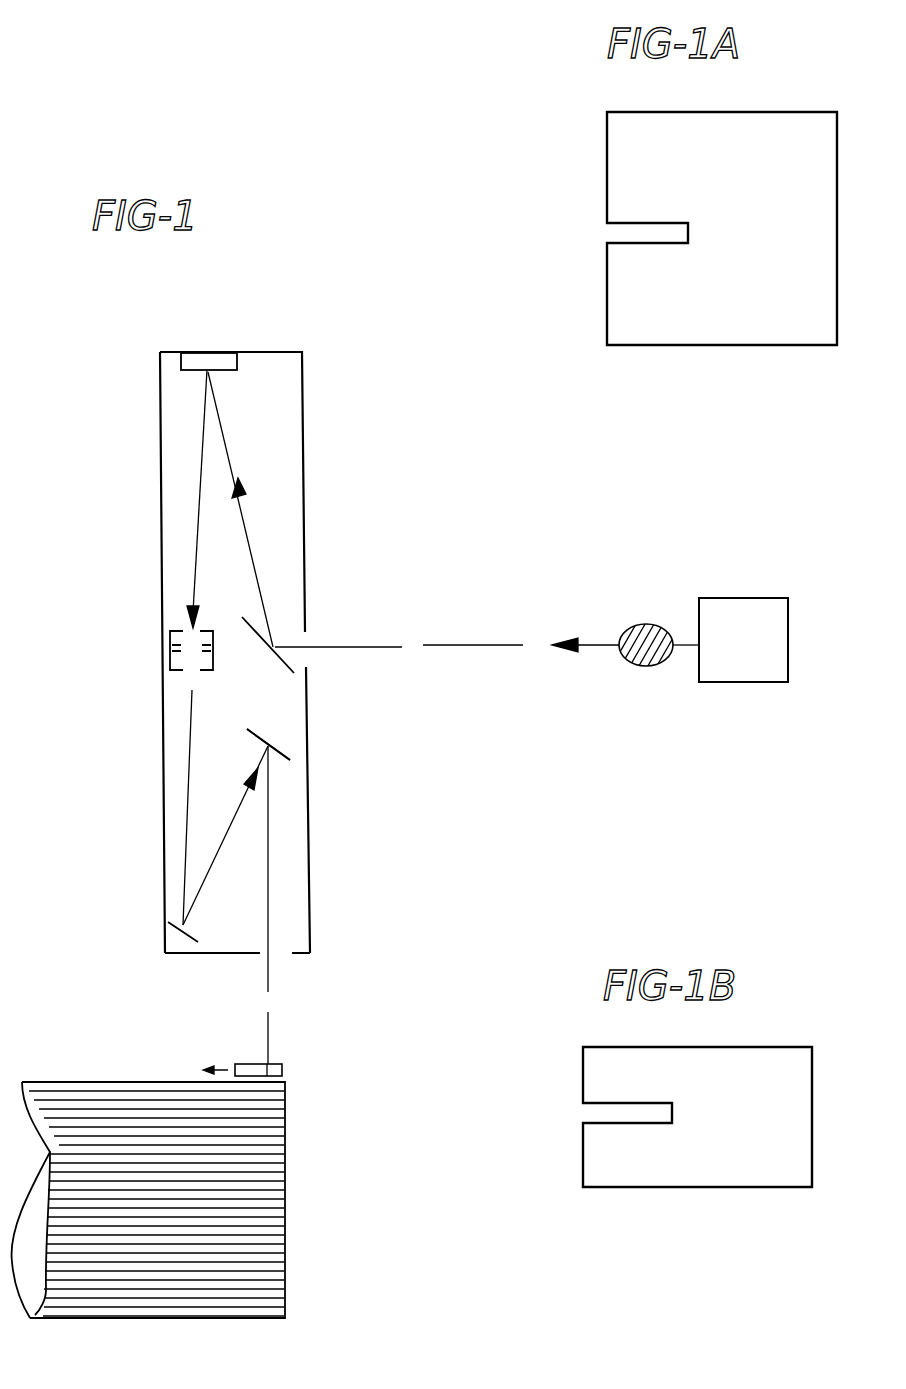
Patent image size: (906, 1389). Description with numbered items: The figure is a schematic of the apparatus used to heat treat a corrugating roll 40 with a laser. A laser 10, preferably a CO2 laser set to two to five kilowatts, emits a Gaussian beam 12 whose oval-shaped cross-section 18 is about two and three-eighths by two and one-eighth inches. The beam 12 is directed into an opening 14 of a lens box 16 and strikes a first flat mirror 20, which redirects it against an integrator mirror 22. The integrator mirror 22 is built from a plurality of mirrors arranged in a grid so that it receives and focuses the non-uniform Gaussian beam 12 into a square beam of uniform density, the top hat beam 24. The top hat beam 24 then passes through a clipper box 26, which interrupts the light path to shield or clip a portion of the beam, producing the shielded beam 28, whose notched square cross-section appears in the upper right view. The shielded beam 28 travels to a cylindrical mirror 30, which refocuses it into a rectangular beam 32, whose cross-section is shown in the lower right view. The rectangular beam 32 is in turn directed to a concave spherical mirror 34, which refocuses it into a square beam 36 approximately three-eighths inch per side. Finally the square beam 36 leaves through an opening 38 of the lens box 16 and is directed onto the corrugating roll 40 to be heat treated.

In FIG. 1, the laser 10 is at (729, 683).
In FIG. 1, the Gaussian beam 12 is at (474, 643).
In FIG. 1, the opening 14 is at (308, 639).
In FIG. 1, the lens box 16 is at (315, 494).
In FIG. 1, the oval-shaped cross-section 18 is at (655, 625).
In FIG. 1, the first flat mirror 20 is at (256, 729).
In FIG. 1, the integrator mirror 22 is at (206, 360).
In FIG. 1, the top hat beam 24 is at (196, 575).
In FIG. 1, the clipper box 26 is at (170, 655).
In FIG. 1, the shielded beam 28 is at (186, 810).
In FIG. 1A, the shielded beam 28 is at (657, 228).
In FIG. 1, the cylindrical mirror 30 is at (168, 948).
In FIG. 1, the rectangular beam 32 is at (205, 888).
In FIG. 1B, the rectangular beam 32 is at (771, 1054).
In FIG. 1, the spherical mirror 34 is at (273, 751).
In FIG. 1, the square beam 36 is at (270, 879).
In FIG. 1, the opening 38 is at (292, 955).
In FIG. 1, the corrugating roll 40 is at (298, 1159).